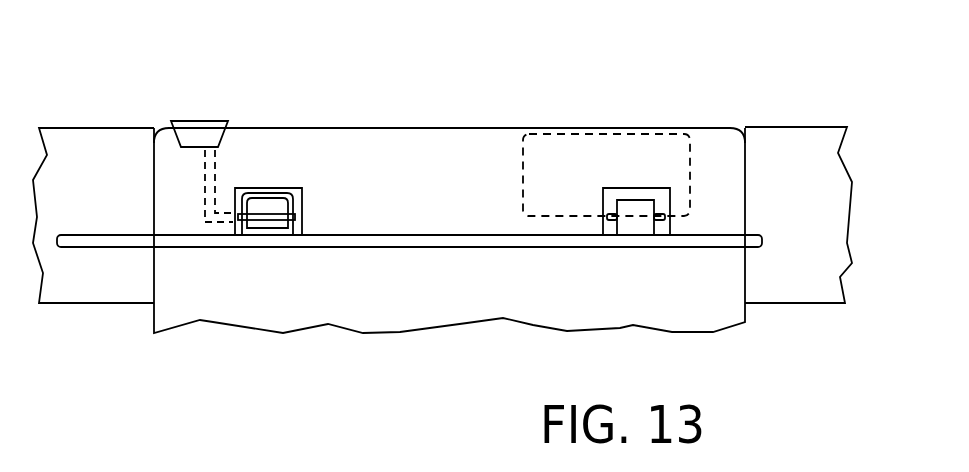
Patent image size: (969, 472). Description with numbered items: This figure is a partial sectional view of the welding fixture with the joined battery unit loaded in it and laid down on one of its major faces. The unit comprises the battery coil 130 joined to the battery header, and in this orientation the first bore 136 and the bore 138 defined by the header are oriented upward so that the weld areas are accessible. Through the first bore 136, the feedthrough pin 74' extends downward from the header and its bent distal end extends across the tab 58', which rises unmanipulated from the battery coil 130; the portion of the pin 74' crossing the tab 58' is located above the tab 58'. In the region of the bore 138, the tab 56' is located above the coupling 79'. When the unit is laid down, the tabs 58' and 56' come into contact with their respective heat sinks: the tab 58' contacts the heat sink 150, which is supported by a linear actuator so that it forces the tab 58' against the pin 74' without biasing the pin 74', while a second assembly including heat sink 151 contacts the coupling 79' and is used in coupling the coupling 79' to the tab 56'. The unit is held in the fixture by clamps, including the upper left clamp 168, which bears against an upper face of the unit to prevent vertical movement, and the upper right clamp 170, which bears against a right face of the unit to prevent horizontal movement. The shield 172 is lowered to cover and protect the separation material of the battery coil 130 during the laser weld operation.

The battery coil 130 is at (283, 333).
The upper right clamp 170 is at (847, 243).
The shield 172 is at (110, 248).
The upper left clamp 168 is at (190, 127).
The feedthrough pin 74' is at (170, 126).
The heat sink 150 is at (288, 193).
The tab 58' is at (246, 302).
The first bore 136 is at (303, 190).
The coupling 79' is at (606, 129).
The bore 138 is at (597, 220).
The heat sink 151 is at (610, 228).
The tab 56' is at (662, 281).